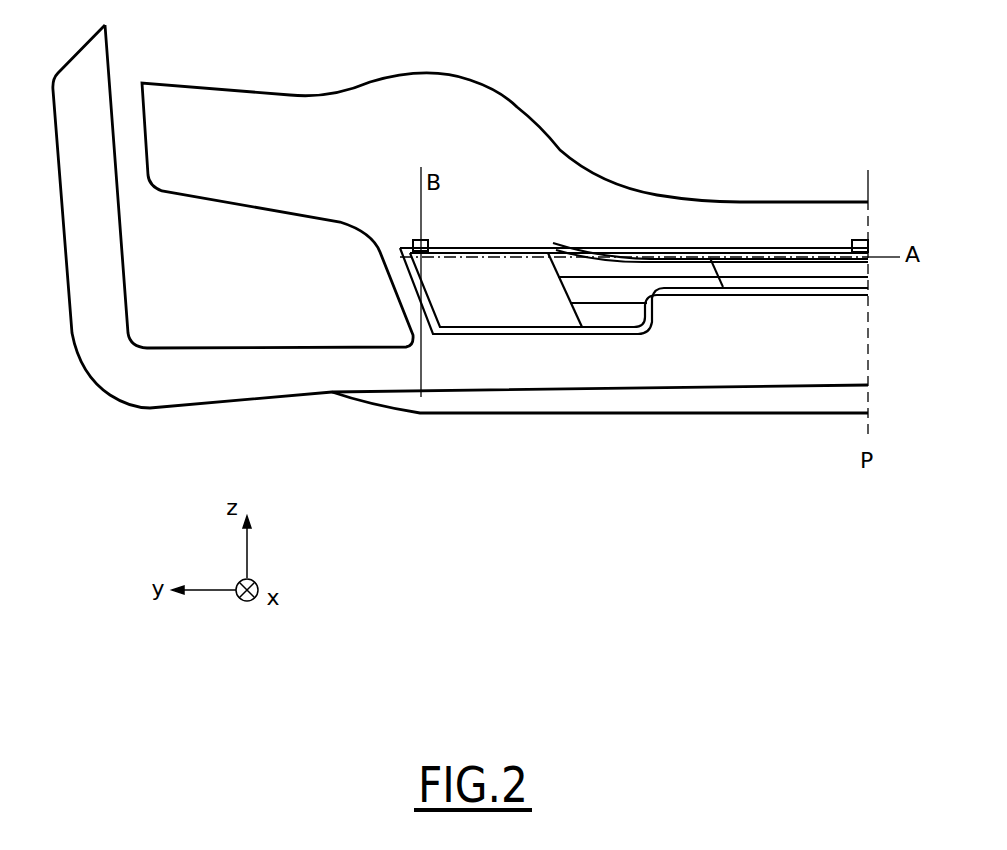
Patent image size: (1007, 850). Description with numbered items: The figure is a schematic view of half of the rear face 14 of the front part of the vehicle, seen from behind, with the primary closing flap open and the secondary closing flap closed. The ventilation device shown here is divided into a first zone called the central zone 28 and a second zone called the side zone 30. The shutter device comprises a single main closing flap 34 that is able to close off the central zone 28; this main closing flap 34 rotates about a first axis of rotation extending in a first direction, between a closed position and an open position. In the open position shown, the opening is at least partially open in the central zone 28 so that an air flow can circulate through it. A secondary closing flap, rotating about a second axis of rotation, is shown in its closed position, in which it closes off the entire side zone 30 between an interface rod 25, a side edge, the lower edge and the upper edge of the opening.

The rear face 14 is at (478, 112).
The support plate 25 is at (470, 240).
The central zone 28 is at (682, 263).
The side zone 30 is at (492, 312).
The main closing flap 34 is at (563, 240).